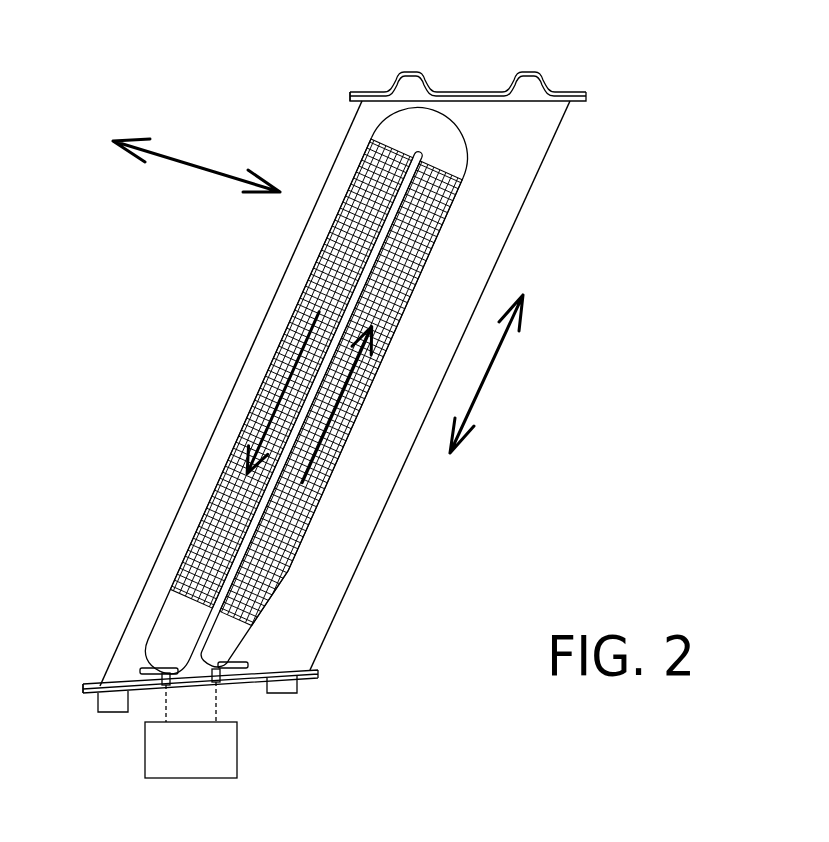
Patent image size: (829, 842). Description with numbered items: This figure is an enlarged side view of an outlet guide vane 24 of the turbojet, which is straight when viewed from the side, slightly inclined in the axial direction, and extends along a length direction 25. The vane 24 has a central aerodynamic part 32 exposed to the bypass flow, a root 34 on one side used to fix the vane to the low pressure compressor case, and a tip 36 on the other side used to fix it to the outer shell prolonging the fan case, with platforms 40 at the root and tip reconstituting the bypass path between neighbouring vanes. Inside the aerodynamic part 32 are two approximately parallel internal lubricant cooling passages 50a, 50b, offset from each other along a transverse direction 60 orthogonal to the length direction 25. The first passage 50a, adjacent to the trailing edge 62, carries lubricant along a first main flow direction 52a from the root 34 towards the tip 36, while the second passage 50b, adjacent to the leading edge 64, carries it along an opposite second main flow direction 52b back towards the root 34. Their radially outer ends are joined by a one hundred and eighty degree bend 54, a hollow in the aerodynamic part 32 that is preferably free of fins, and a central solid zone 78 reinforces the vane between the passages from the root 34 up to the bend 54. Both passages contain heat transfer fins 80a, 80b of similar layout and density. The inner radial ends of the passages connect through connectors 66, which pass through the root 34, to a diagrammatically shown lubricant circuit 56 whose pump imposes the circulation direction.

The outlet guide vane 24 is at (355, 401).
The length direction 25 is at (492, 367).
The aerodynamic part 32 is at (373, 393).
The root 34 is at (285, 687).
The tip 36 is at (526, 91).
The platform 40 is at (352, 100).
The first internal lubricant cooling passage 50a is at (285, 609).
The second internal lubricant cooling passage 50b is at (178, 563).
The first main flow direction 52a is at (313, 463).
The second main flow direction 52b is at (273, 397).
The 180° bend 54 is at (455, 142).
The lubricant circuit 56 is at (213, 762).
The transverse direction 60 is at (195, 168).
The trailing edge 62 is at (525, 197).
The leading edge 64 is at (212, 440).
The connector 66 is at (162, 686).
The central solid zone 78 is at (383, 235).
The heat transfer fins 80a is at (288, 552).
The heat transfer fins 80b is at (288, 578).